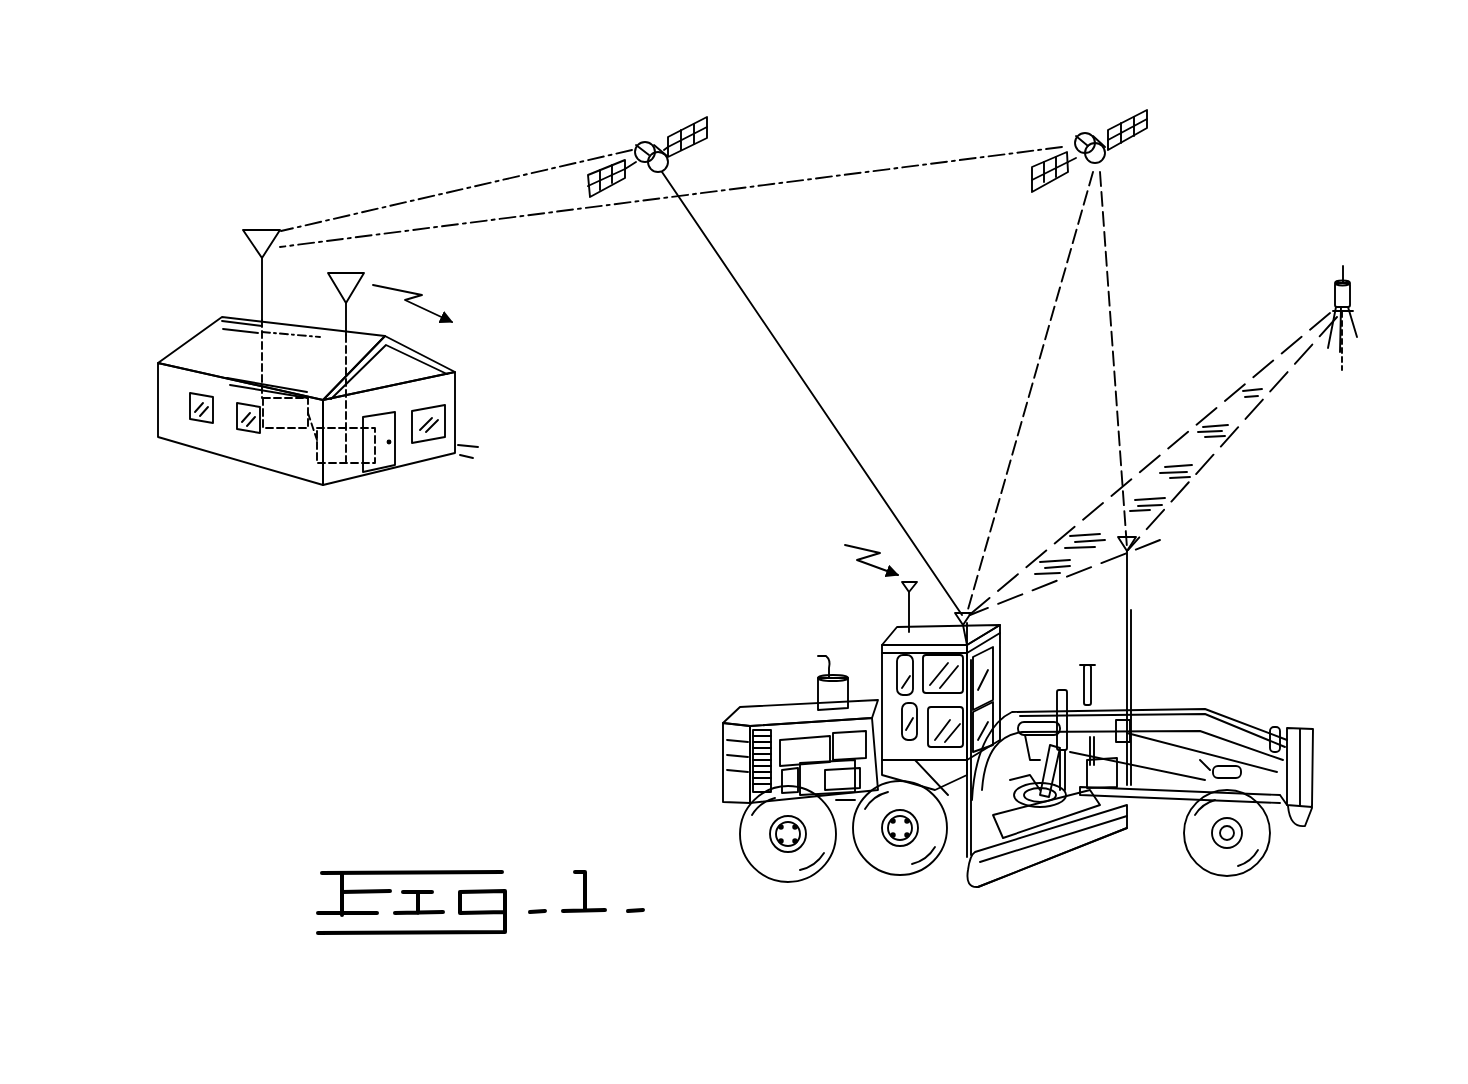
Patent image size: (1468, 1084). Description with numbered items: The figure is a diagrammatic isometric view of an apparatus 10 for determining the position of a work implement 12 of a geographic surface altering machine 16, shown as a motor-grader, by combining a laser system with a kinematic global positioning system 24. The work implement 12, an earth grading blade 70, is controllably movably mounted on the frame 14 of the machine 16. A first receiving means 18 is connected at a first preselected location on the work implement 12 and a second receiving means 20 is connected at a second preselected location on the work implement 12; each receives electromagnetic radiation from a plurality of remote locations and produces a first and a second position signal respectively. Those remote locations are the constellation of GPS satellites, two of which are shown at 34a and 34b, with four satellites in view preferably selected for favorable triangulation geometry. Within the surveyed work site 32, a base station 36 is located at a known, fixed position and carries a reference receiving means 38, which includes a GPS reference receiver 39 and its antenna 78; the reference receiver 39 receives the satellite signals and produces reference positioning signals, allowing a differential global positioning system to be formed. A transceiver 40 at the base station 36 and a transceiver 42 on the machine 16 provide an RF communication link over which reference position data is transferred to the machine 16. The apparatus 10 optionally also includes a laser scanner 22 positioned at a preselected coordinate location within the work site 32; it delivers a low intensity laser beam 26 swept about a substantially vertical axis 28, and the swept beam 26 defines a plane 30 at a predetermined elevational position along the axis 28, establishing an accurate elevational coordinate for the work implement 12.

The apparatus 10 is at (320, 773).
The work implement 12 is at (1063, 856).
The frame 14 is at (1253, 727).
The geographic surface altering machine 16 is at (718, 785).
The first receiving means 18 is at (958, 845).
The second receiving means 20 is at (1110, 787).
The laser scanner 22 is at (1357, 292).
The global positioning system 24 is at (426, 554).
The laser beam 26 is at (1247, 415).
The vertical axis 28 is at (1345, 267).
The plane 30 is at (1200, 452).
The work site 32 is at (648, 594).
The satellite 34a is at (652, 143).
The satellite 34b is at (1088, 138).
The base station 36 is at (470, 400).
The reference receiving means 38 is at (248, 297).
The GPS reference receiver 39 is at (263, 428).
The transceiver 40 is at (366, 286).
The transceiver 42 is at (900, 601).
The earth grading blade 70 is at (995, 863).
The antenna 78 is at (245, 240).